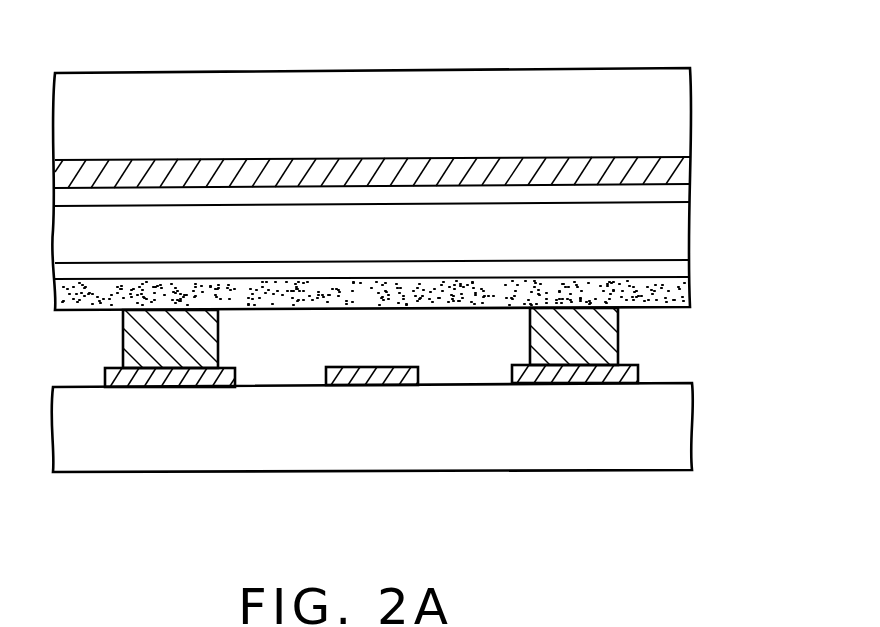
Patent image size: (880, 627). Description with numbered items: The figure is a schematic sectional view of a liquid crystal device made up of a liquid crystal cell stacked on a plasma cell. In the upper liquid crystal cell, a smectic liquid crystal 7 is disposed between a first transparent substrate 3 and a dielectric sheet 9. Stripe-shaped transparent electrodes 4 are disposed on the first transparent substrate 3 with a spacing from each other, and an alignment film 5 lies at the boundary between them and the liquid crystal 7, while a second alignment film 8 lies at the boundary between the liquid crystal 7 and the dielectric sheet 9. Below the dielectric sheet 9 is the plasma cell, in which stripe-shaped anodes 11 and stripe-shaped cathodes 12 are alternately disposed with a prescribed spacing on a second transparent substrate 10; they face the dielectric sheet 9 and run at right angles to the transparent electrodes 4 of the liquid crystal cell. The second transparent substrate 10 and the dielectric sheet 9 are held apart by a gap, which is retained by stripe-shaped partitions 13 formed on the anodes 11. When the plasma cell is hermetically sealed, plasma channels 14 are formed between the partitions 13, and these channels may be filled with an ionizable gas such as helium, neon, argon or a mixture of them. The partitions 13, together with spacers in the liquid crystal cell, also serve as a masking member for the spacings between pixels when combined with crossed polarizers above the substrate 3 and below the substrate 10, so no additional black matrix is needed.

The first transparent substrate 3 is at (506, 90).
The transparent electrodes 4 is at (680, 167).
The alignment film 5 is at (683, 196).
The smectic liquid crystal 7 is at (675, 235).
The alignment film 8 is at (683, 272).
The dielectric sheet 9 is at (683, 295).
The second transparent substrate 10 is at (675, 432).
The anodes 11 is at (107, 368).
The cathodes 12 is at (373, 372).
The partitions 13 is at (203, 343).
The plasma channels 14 is at (294, 360).